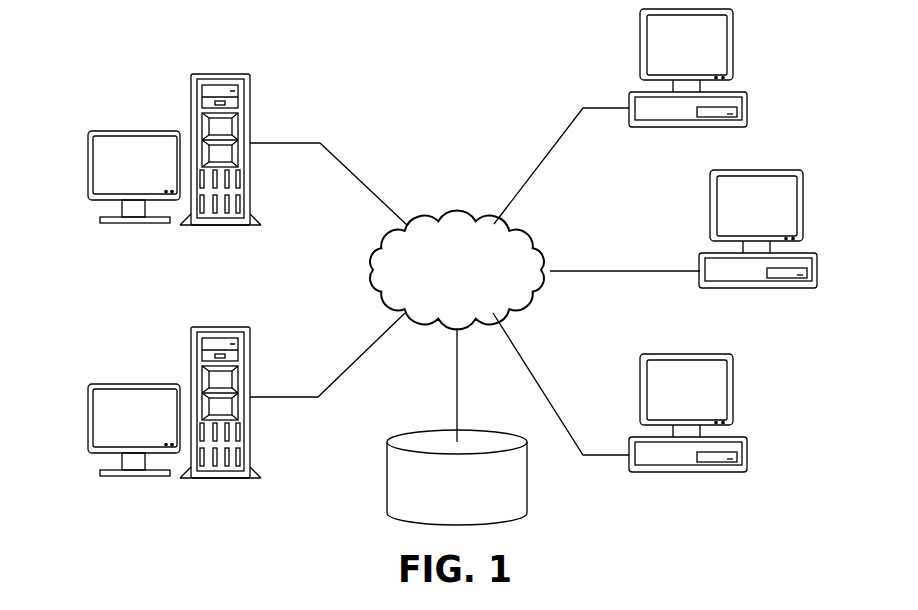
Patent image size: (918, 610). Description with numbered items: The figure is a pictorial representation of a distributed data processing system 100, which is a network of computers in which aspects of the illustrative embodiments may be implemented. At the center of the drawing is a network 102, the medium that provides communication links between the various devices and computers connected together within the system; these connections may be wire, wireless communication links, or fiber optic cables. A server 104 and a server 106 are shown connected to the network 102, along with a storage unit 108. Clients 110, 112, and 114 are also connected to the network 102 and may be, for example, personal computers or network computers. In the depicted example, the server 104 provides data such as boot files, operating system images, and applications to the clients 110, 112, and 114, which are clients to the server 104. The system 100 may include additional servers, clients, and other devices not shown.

The distributed data processing system 100 is at (323, 64).
The network 102 is at (432, 218).
The server 104 is at (88, 165).
The server 106 is at (88, 418).
The storage unit 108 is at (387, 478).
The client 110 is at (747, 100).
The client 112 is at (815, 280).
The client 114 is at (747, 463).